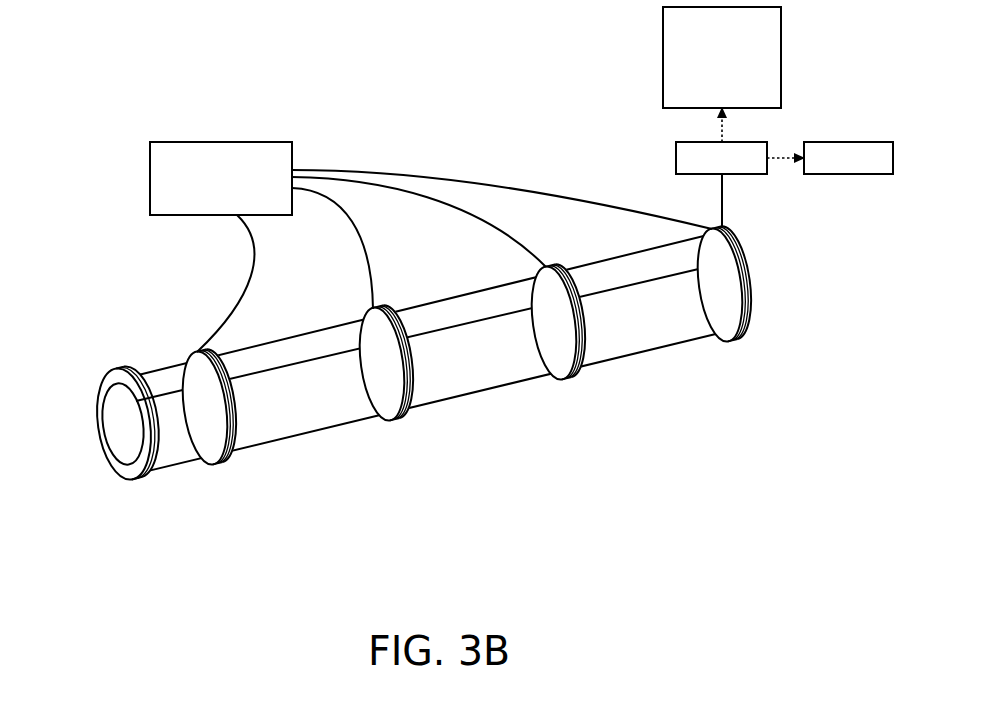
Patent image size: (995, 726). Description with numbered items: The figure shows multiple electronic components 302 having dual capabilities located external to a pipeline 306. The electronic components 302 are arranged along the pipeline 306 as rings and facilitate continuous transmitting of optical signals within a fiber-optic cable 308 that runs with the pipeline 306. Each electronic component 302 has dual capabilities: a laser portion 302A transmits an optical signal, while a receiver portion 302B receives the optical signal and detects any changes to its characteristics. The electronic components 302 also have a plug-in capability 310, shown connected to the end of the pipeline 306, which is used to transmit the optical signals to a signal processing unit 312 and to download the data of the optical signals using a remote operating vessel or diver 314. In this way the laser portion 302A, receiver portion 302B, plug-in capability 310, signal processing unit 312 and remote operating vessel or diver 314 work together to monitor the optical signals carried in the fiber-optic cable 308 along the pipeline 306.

The electronic components 302 is at (243, 192).
The laser portion 302A is at (238, 438).
The receiver portion 302B is at (231, 455).
The pipeline 306 is at (142, 372).
The fiber-optic cable 308 is at (168, 397).
The plug-in capability 310 is at (743, 170).
The signal processing unit 312 is at (743, 72).
The remote operating vessel (ROV) or diver 314 is at (870, 170).